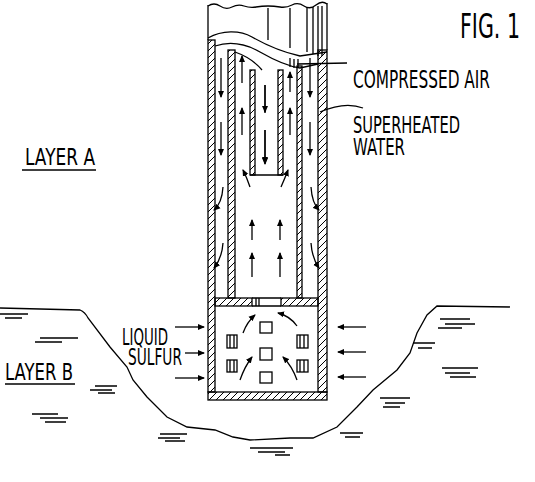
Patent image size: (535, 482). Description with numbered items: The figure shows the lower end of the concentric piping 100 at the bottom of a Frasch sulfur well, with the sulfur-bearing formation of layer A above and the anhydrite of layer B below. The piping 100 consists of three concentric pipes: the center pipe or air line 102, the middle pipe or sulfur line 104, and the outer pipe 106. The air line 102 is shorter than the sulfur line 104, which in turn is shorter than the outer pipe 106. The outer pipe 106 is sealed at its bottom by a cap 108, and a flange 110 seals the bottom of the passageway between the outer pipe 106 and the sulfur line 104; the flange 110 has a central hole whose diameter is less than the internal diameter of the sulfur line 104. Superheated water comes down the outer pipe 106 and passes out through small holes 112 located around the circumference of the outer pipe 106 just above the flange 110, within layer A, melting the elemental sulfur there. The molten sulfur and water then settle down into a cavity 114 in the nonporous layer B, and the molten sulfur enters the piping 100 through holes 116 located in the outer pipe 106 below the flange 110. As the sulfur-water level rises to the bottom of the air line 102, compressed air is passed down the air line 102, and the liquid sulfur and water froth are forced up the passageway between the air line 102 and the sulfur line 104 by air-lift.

The piping 100 is at (334, 31).
The center pipe (air line) 102 is at (213, 47).
The middle pipe (sulfur line) 104 is at (230, 105).
The outer pipe 106 is at (214, 173).
The cap 108 is at (250, 400).
The flange 110 is at (328, 290).
The small holes 112 is at (213, 268).
The cavity 114 is at (194, 404).
The holes 116 is at (306, 370).